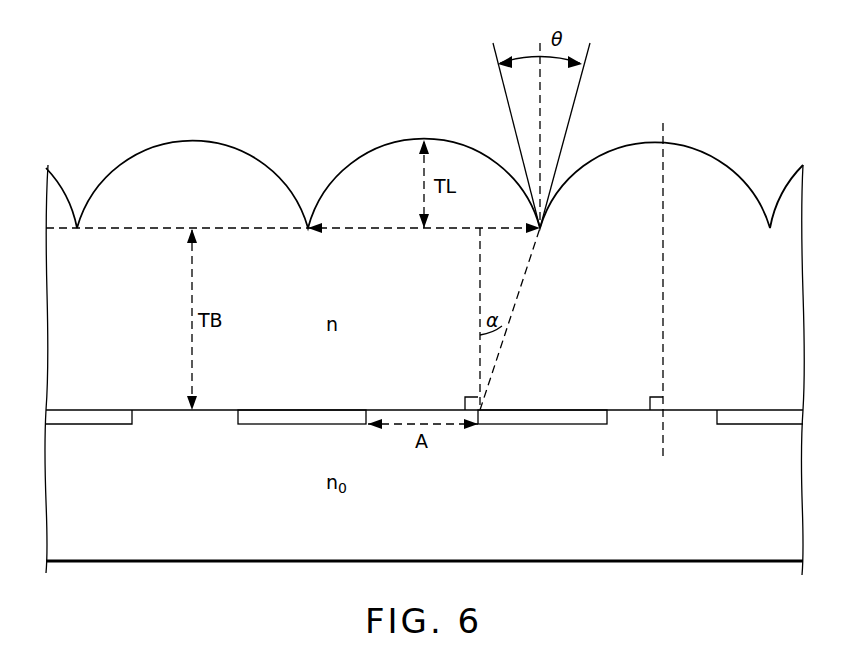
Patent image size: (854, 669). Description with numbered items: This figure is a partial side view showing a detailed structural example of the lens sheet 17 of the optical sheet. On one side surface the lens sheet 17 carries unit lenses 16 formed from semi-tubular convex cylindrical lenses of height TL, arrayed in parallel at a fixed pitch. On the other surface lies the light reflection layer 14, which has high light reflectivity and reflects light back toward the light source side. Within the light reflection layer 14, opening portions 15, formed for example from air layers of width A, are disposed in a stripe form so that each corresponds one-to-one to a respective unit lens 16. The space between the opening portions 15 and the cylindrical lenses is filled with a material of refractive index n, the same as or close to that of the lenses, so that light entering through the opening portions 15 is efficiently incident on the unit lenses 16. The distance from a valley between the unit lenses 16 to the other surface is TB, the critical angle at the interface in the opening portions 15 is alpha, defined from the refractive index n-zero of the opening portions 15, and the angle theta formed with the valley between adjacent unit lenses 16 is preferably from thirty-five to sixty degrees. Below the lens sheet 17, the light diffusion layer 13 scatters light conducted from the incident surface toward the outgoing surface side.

The light diffusion layer 13 is at (72, 492).
The light reflection layer 14 is at (563, 411).
The opening portions 15 is at (426, 411).
The unit lenses 16 is at (245, 162).
The lens sheet 17 is at (72, 314).